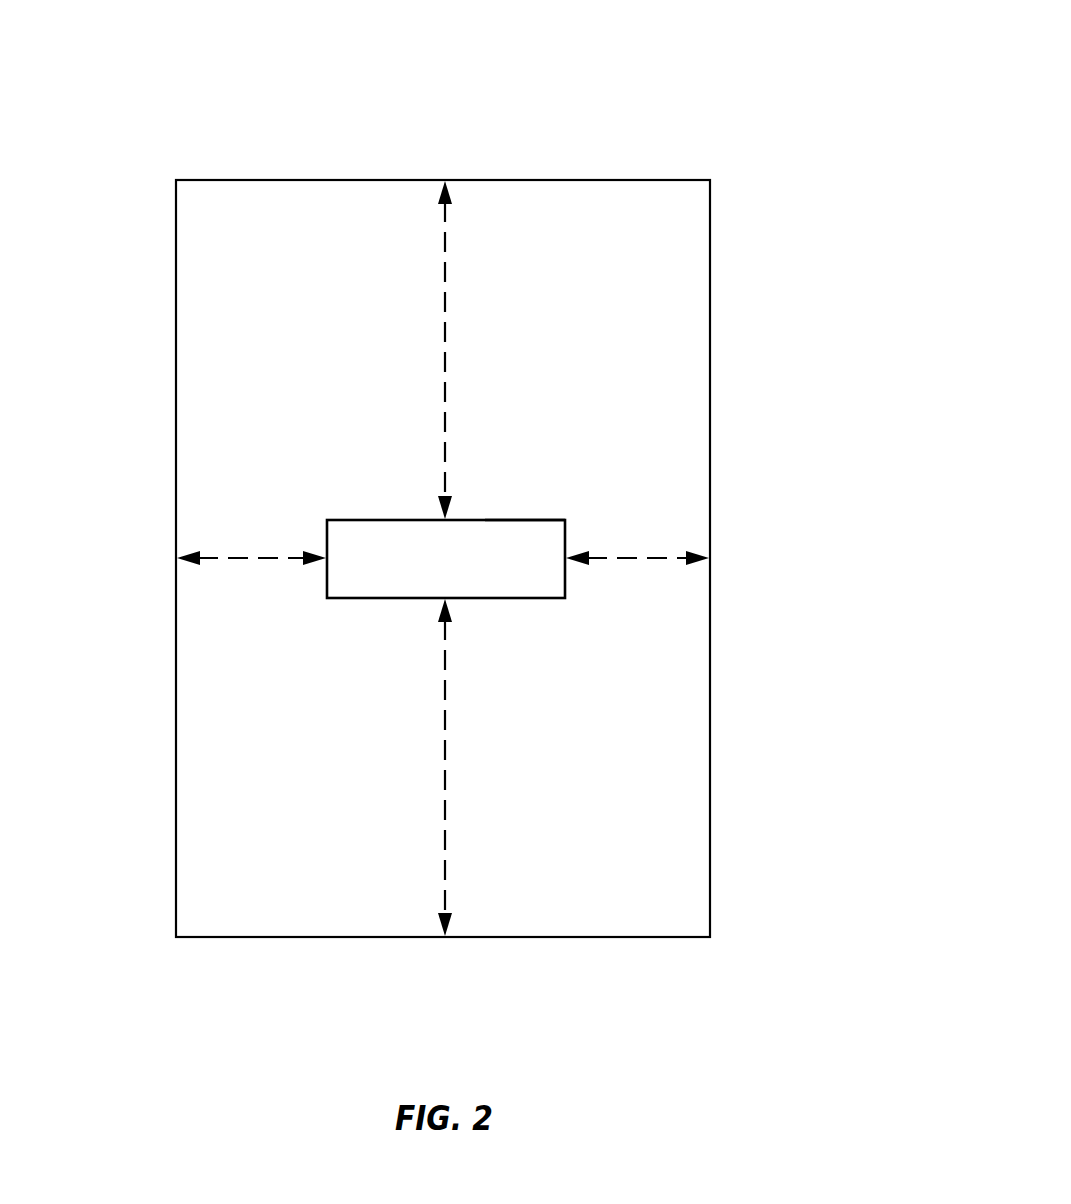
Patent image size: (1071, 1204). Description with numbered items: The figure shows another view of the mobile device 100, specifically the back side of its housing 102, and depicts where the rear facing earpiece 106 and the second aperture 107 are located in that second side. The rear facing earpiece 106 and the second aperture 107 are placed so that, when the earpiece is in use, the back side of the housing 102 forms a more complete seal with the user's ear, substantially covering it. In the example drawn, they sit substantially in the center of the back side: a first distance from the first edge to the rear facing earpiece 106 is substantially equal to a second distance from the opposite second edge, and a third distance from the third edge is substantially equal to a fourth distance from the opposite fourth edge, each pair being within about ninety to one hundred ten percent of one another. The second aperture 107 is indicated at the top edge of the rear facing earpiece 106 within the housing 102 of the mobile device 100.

The mobile device 100 is at (449, 487).
The housing 102 is at (449, 535).
The rear facing earpiece 106 is at (363, 530).
The second aperture 107 is at (561, 449).